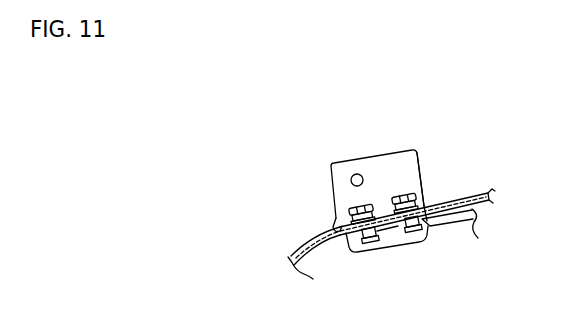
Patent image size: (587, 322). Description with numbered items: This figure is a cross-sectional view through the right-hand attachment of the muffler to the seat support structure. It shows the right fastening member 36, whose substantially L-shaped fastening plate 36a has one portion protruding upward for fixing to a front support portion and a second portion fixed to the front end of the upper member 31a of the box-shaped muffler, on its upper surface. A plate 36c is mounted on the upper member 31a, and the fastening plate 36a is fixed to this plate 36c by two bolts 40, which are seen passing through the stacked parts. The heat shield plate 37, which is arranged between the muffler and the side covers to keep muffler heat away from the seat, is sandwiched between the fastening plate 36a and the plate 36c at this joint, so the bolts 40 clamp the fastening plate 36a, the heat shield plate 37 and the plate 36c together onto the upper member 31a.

The fastening member 36 is at (326, 167).
The fastening plate 36a is at (424, 161).
The plate 36c is at (384, 233).
The heat shield plate 37 is at (312, 244).
The upper member 31a is at (460, 212).
The bolts 40 is at (367, 205).